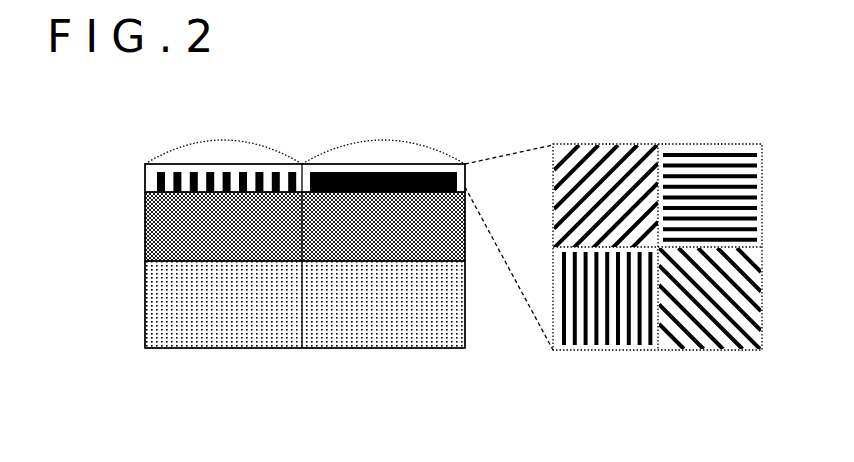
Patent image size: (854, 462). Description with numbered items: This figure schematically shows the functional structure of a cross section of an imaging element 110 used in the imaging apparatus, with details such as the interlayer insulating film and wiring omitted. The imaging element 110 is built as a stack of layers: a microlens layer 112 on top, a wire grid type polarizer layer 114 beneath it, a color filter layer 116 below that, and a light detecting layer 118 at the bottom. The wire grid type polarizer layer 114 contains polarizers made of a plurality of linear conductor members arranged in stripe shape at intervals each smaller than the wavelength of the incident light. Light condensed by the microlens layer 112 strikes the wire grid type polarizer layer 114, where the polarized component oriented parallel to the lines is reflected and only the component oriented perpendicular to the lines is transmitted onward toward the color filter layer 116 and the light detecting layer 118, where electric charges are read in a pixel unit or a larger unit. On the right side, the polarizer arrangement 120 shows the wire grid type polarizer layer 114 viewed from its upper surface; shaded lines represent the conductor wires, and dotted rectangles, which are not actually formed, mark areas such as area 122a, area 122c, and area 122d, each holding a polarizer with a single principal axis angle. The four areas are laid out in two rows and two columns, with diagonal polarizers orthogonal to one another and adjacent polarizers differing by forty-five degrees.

The imaging element 110 is at (270, 267).
The microlens layer 112 is at (320, 153).
The wire grid type polarizer layer 114 is at (146, 180).
The color filter layer 116 is at (146, 230).
The light detecting layer 118 is at (146, 307).
The polarizer arrangement 120 is at (657, 272).
The area 122a is at (600, 143).
The area 122c is at (740, 352).
The area 122d is at (597, 352).